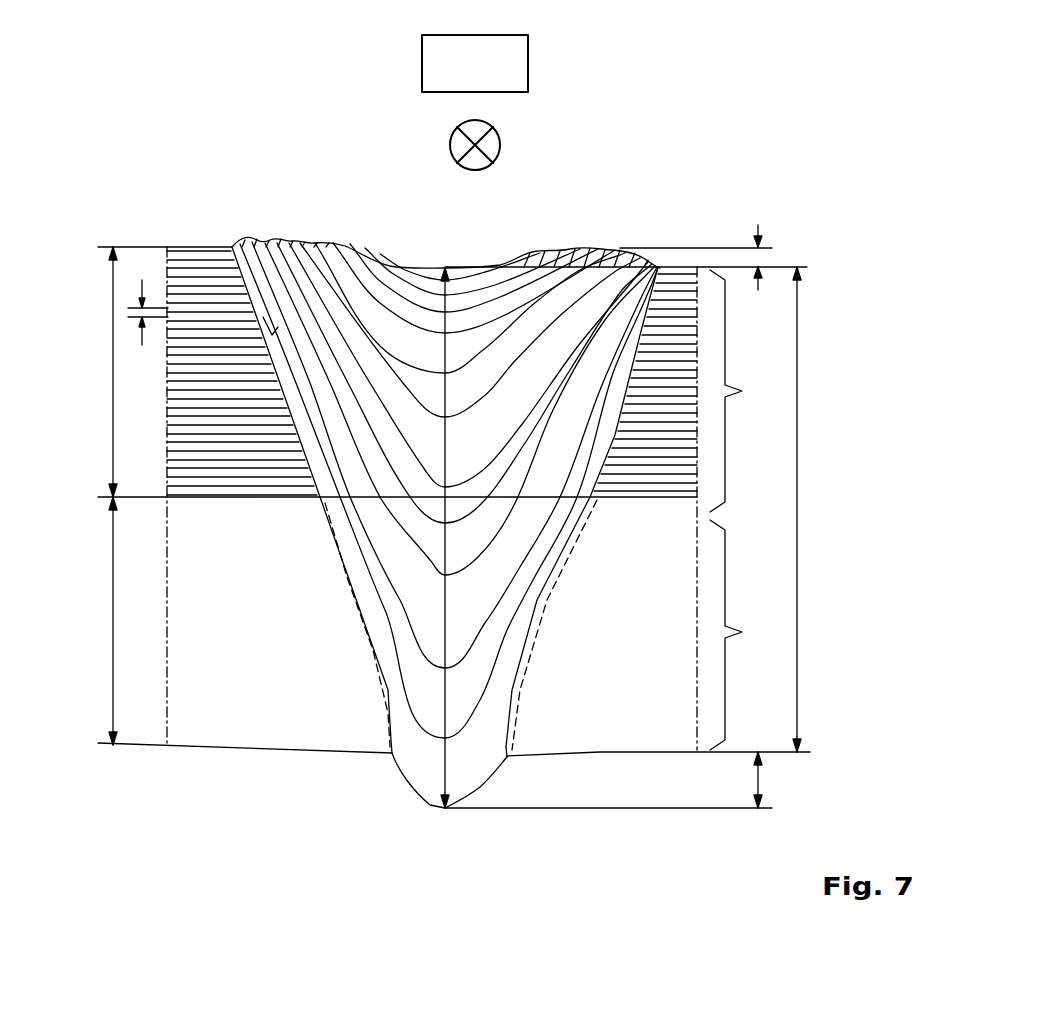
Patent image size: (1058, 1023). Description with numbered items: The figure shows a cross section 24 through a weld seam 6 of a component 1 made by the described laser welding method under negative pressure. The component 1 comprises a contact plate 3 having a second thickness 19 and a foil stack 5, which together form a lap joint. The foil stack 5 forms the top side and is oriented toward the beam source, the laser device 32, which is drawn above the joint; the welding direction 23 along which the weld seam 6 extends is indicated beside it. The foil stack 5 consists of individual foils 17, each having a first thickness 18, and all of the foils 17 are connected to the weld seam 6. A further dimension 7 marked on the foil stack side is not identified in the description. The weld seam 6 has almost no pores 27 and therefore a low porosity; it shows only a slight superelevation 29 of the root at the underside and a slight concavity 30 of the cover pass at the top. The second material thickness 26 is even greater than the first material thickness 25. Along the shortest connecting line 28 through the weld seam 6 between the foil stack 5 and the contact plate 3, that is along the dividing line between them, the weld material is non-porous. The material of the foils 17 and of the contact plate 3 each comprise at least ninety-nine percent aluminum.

The component 1 is at (822, 350).
The contact plate 3 is at (662, 845).
The foil stack 5 is at (680, 391).
The weld seam 6 is at (507, 368).
The upper layer thickness 7 is at (113, 380).
The foils 17 is at (210, 297).
The first thickness 18 is at (142, 337).
The second thickness 19 is at (113, 590).
The welding direction 23 is at (450, 145).
The cross section 24 is at (610, 198).
The first material thickness 25 is at (800, 493).
The second material thickness 26 is at (445, 755).
The pores 27 is at (270, 307).
The shortest connecting line 28 is at (372, 500).
The superelevation of the root 29 is at (760, 780).
The concavity of the cover pass 30 is at (762, 228).
The laser device 32 is at (422, 62).